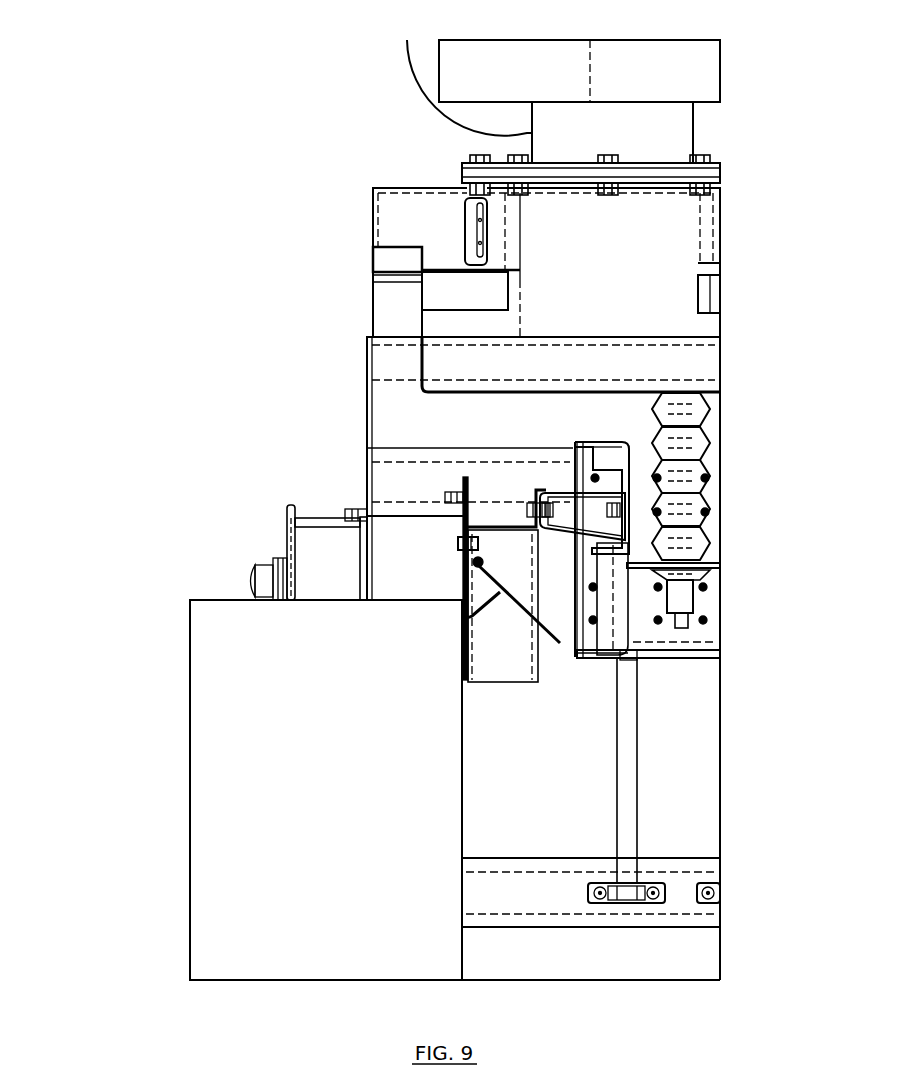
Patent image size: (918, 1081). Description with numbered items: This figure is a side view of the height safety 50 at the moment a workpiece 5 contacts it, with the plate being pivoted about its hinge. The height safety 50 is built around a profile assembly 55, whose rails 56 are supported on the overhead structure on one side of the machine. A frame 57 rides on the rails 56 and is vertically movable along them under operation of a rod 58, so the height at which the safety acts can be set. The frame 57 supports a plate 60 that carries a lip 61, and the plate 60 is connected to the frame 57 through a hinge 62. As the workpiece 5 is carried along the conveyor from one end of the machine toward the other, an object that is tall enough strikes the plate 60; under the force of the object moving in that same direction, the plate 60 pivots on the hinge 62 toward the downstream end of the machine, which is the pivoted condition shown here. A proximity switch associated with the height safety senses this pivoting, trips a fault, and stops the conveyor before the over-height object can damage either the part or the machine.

The workpiece 5 is at (190, 762).
The height safety 50 is at (463, 518).
The profile assembly 55 is at (595, 475).
The rails 56 is at (638, 787).
The frame 57 is at (610, 535).
The rod 58 is at (690, 620).
The plate 60 is at (500, 593).
The lip 61 is at (463, 612).
The hinge 62 is at (470, 527).